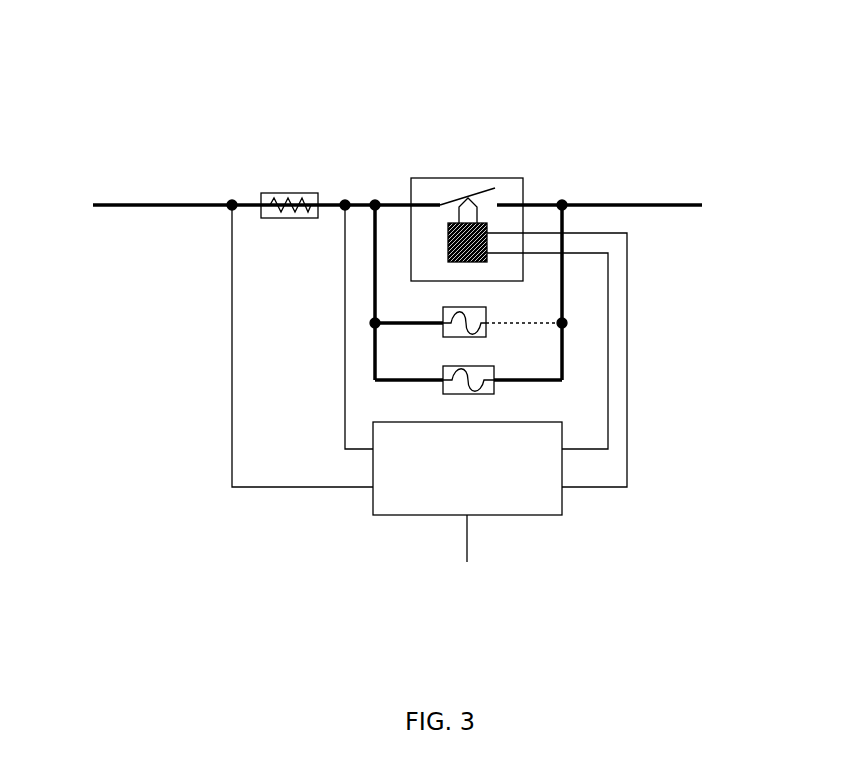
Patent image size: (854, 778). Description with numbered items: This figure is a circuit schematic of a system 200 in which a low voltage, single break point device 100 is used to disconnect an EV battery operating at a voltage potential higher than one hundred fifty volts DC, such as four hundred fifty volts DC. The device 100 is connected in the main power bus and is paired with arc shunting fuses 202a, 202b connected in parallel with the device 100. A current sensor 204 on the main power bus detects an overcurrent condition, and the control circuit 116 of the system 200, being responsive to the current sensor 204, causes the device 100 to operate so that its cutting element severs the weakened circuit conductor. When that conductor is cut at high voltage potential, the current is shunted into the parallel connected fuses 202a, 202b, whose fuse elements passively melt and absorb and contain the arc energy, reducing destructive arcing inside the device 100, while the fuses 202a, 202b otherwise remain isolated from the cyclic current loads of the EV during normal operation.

The system 200 is at (526, 126).
The low voltage, single break point device 100 is at (411, 195).
The current sensor 204 is at (261, 207).
The arc shunting fuse 202a is at (488, 322).
The arc shunting fuse 202b is at (496, 381).
The control circuit 116 is at (524, 515).